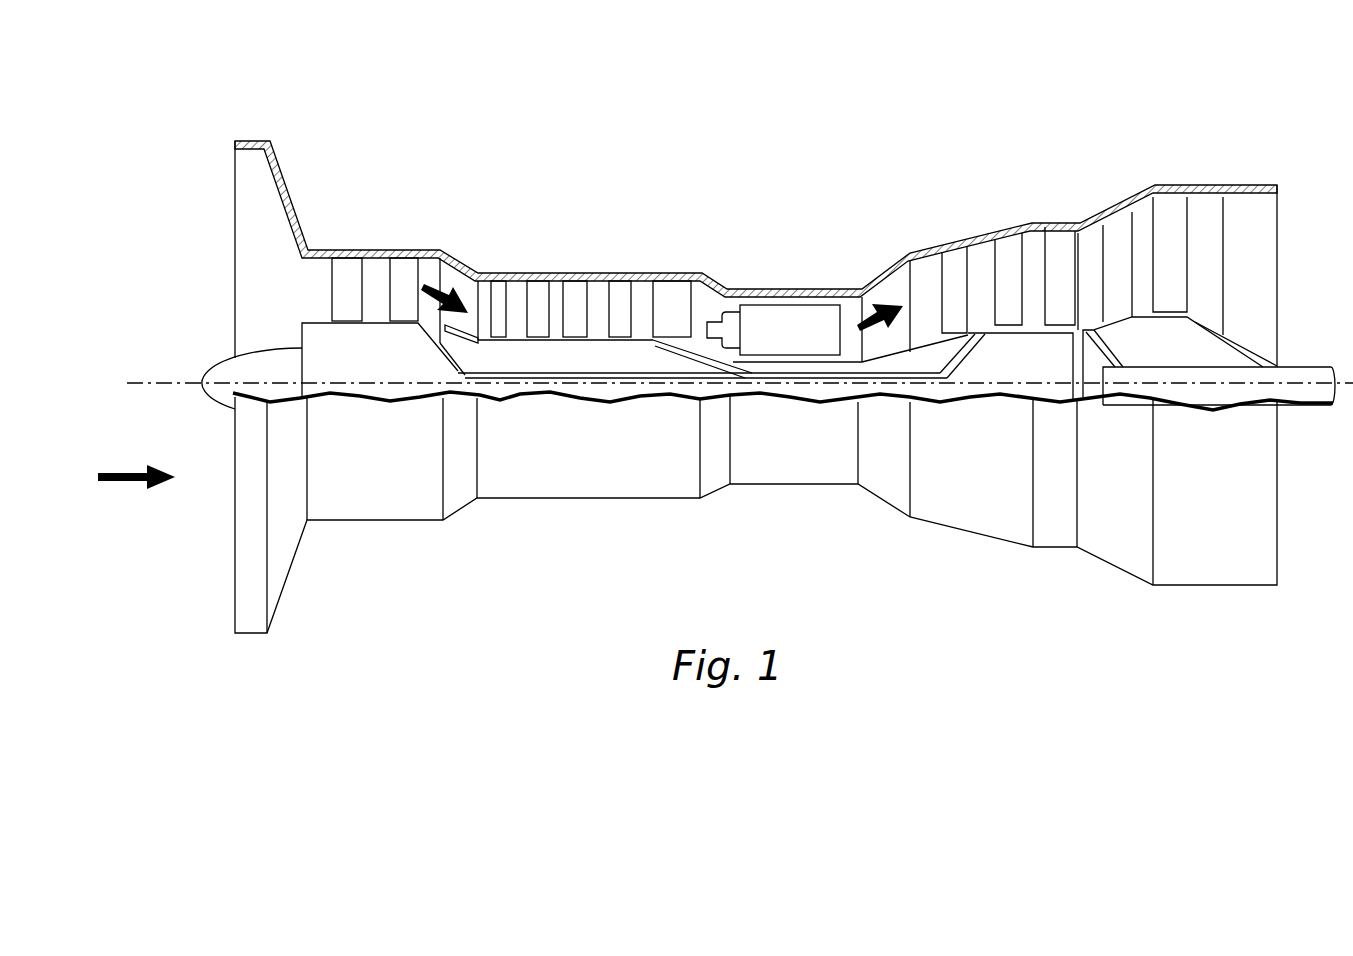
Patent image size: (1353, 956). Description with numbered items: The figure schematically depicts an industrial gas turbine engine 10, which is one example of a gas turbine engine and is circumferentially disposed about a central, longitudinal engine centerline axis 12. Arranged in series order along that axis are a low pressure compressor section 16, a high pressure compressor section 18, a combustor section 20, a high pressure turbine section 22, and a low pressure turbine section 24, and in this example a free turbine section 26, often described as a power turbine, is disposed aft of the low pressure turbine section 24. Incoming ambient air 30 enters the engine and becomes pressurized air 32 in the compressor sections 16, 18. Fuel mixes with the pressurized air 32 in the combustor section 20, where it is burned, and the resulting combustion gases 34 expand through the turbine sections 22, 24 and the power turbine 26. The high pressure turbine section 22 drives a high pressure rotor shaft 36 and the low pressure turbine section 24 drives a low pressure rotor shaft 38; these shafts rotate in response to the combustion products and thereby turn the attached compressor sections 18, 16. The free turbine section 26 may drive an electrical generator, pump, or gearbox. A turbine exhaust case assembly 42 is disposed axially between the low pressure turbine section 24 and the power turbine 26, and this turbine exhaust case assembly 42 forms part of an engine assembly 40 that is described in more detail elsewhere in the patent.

The industrial gas turbine engine 10 is at (756, 214).
The engine centerline axis 12 is at (172, 381).
The low pressure compressor section 16 is at (366, 230).
The high pressure compressor section 18 is at (612, 242).
The combustor section 20 is at (766, 325).
The high pressure turbine section 22 is at (952, 218).
The low pressure turbine section 24 is at (1070, 205).
The free turbine section 26 is at (1220, 185).
The incoming ambient air 30 is at (133, 470).
The pressurized air 32 is at (447, 312).
The combustion gases 34 is at (872, 308).
The high pressure rotor shaft 36 is at (684, 352).
The low pressure rotor shaft 38 is at (455, 360).
The engine assembly 40 is at (1132, 187).
The turbine exhaust case assembly 42 is at (1033, 552).